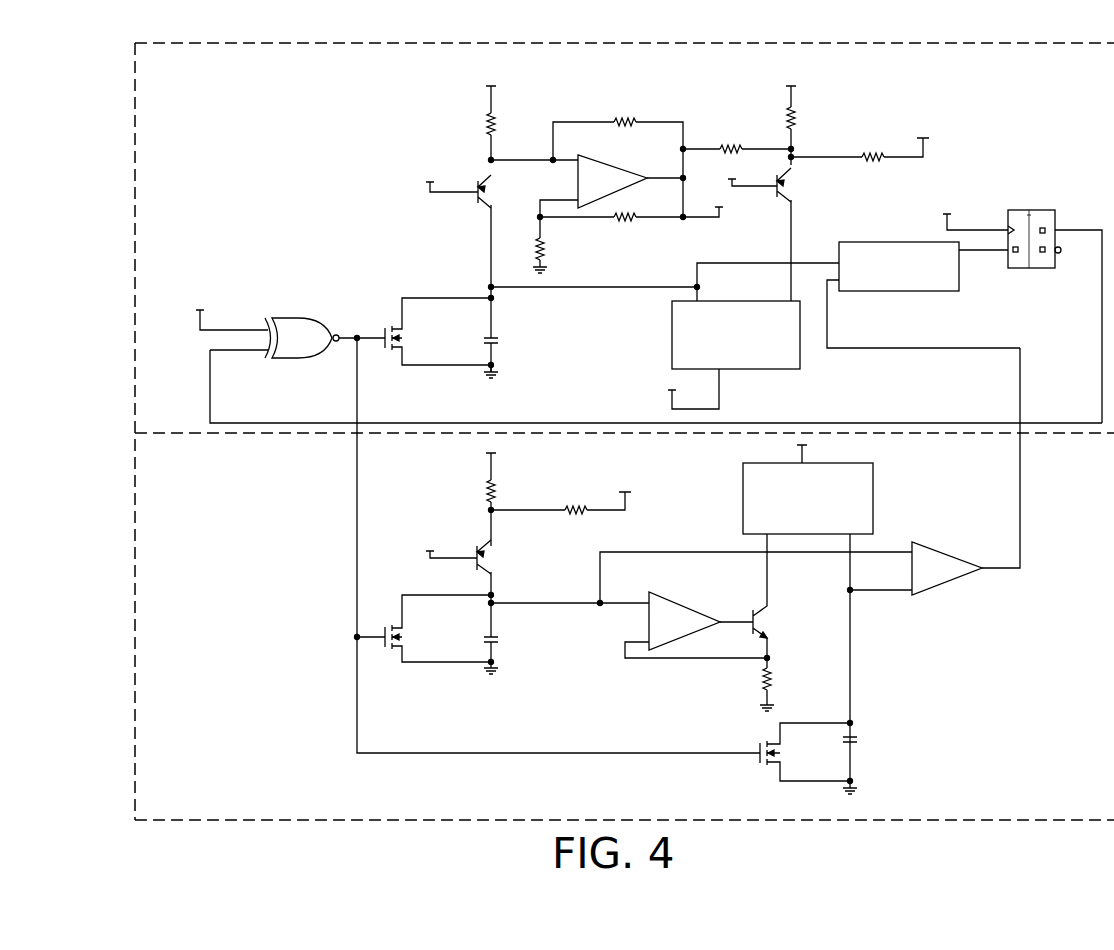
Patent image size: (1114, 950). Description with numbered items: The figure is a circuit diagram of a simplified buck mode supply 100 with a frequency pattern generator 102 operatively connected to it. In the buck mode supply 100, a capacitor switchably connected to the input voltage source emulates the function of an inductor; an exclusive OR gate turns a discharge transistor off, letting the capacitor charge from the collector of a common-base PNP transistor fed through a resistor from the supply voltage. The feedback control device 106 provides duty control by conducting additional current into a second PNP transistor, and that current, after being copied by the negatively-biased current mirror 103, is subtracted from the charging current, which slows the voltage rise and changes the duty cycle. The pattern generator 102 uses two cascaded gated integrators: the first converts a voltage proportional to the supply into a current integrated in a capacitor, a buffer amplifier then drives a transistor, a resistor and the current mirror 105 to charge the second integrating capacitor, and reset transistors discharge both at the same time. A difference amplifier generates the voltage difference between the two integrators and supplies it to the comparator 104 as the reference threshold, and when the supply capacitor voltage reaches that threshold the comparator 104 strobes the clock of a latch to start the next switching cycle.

The buck mode supply 100 is at (363, 132).
The frequency pattern generator 102 is at (322, 713).
The negatively-biased current mirror 103 is at (772, 369).
The comparator 104 is at (940, 291).
The current mirror 105 is at (873, 470).
The feedback control device 106 is at (953, 112).